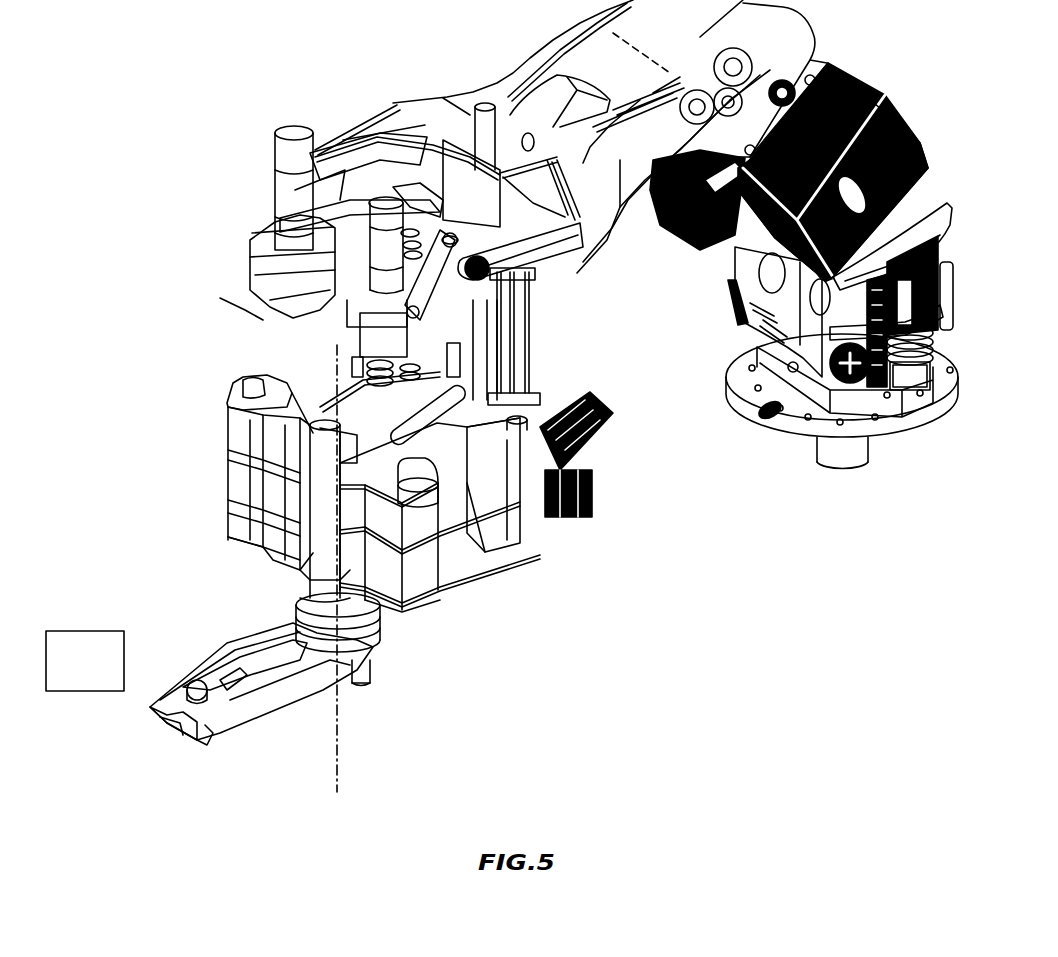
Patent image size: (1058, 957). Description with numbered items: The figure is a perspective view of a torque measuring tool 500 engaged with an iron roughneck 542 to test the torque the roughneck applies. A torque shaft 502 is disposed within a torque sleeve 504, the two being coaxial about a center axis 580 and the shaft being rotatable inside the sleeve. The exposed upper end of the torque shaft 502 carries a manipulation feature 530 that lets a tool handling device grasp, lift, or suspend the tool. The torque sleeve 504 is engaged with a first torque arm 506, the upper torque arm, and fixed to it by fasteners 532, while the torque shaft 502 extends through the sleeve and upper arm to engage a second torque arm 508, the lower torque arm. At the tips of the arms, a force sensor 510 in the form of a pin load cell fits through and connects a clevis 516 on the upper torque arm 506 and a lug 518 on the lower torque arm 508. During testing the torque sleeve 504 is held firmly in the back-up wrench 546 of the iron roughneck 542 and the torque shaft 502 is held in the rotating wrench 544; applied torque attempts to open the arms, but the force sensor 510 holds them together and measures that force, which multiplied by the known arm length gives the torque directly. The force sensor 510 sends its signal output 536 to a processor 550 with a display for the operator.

The torque measuring tool 500 is at (388, 720).
The torque shaft 502 is at (320, 472).
The torque sleeve 504 is at (327, 552).
The first torque arm 506 is at (313, 663).
The second torque arm 508 is at (253, 652).
The force sensor 510 is at (240, 697).
The clevis 516 is at (203, 737).
The lug 518 is at (157, 713).
The manipulation feature 530 is at (240, 387).
The fasteners 532 is at (307, 597).
The signal output 536 is at (190, 685).
The iron roughneck 542 is at (262, 68).
The rotating wrench 544 is at (390, 527).
The back-up wrench 546 is at (397, 583).
The processor 550 is at (197, 687).
The center axis 580 is at (332, 358).